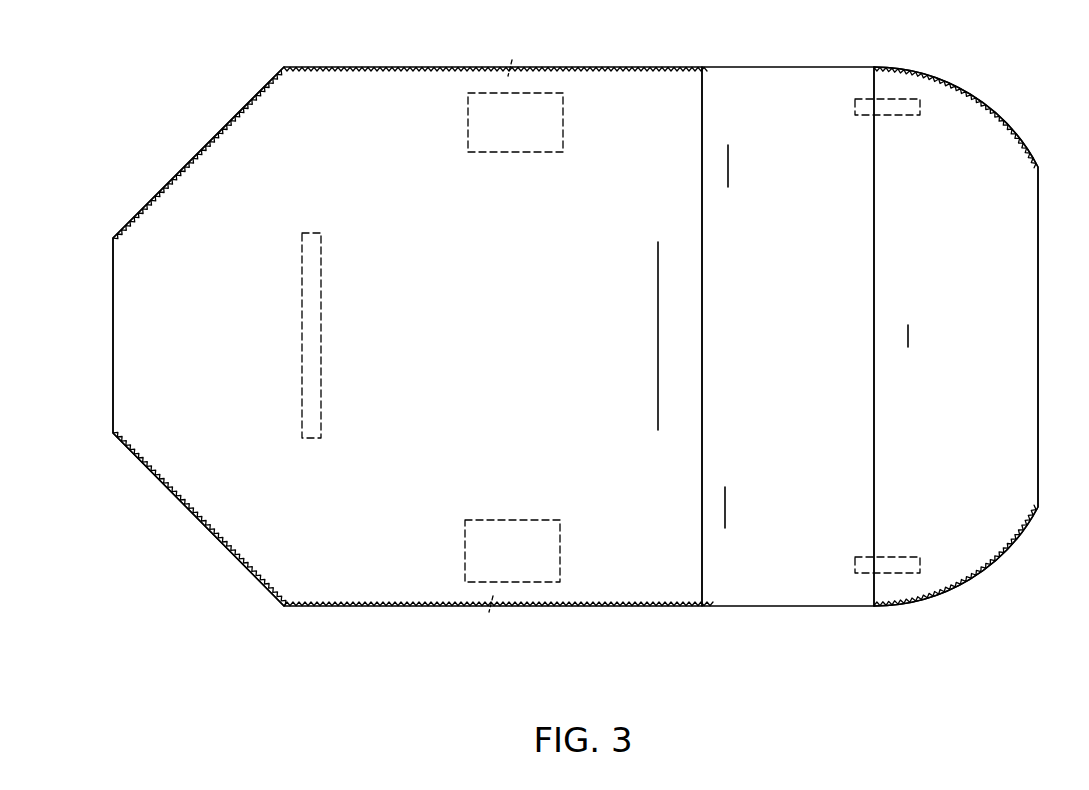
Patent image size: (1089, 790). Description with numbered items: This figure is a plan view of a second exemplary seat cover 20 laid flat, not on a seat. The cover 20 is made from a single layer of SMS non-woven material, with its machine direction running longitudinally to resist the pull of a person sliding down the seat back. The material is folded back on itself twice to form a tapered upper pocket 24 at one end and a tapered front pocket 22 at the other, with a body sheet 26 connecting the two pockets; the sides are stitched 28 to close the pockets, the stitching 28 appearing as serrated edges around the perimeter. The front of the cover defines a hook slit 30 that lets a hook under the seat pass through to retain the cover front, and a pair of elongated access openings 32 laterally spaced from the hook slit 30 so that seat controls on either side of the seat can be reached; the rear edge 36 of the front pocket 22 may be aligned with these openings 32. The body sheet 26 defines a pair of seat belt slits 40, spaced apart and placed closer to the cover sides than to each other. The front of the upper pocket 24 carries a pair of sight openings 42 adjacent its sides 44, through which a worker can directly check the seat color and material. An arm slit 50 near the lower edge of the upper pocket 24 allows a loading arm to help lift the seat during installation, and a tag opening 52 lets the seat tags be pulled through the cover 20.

The seat cover 20 is at (402, 632).
The front pocket 22 is at (965, 548).
The upper pocket 24 is at (205, 502).
The body sheet 26 is at (751, 80).
The stitching 28 is at (197, 157).
The hook slit 30 is at (909, 336).
The access openings 32 is at (856, 108).
The rear edge of front pocket 36 is at (873, 246).
The seat belt slits 40 is at (729, 165).
The sight openings 42 is at (484, 120).
The sides of upper pocket 44 is at (504, 84).
The arm slit 50 is at (657, 338).
The tag opening 52 is at (312, 308).